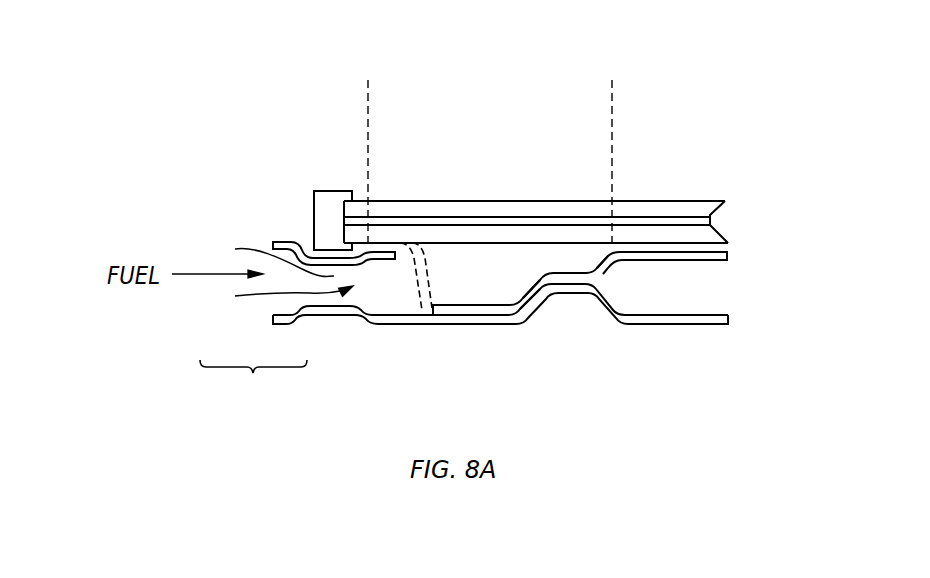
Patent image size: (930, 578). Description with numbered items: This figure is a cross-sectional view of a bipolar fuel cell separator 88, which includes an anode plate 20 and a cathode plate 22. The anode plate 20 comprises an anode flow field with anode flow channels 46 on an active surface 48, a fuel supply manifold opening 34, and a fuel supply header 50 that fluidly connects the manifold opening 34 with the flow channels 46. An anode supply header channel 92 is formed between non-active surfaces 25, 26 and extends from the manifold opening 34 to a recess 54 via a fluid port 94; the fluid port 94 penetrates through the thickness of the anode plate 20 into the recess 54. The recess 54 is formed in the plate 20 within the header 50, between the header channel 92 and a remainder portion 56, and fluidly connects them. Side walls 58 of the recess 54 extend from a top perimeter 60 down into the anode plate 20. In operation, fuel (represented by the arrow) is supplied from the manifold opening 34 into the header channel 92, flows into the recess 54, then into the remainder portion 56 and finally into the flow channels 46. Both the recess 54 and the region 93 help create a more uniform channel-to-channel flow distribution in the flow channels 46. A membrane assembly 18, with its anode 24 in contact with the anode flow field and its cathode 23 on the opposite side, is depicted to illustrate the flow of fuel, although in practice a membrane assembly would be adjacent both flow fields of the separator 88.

The membrane assembly 18 is at (782, 198).
The anode plate 20 is at (283, 241).
The cathode plate 22 is at (280, 326).
The cathode 23 is at (705, 233).
The anode 24 is at (722, 230).
The non-active surface 25 is at (349, 267).
The non-active surface 26 is at (353, 303).
The fuel supply manifold opening 34 is at (253, 386).
The anode flow channels 46 is at (698, 207).
The active surface 48 is at (658, 243).
The fuel supply header 50 is at (612, 80).
The recess 54 is at (467, 293).
The remainder portion 56 is at (593, 250).
The side walls 58 is at (523, 288).
The top perimeter 60 is at (568, 262).
The bipolar fuel cell separator 88 is at (782, 244).
The anode supply header channel 92 is at (269, 257).
The region 93 is at (279, 300).
The fluid port 94 is at (427, 268).